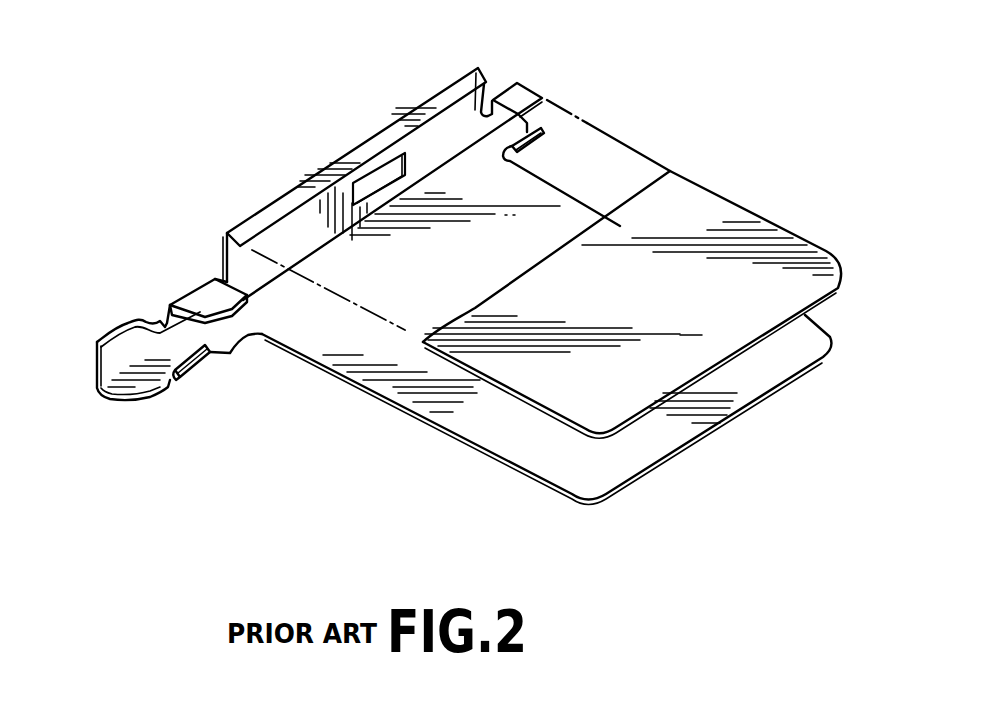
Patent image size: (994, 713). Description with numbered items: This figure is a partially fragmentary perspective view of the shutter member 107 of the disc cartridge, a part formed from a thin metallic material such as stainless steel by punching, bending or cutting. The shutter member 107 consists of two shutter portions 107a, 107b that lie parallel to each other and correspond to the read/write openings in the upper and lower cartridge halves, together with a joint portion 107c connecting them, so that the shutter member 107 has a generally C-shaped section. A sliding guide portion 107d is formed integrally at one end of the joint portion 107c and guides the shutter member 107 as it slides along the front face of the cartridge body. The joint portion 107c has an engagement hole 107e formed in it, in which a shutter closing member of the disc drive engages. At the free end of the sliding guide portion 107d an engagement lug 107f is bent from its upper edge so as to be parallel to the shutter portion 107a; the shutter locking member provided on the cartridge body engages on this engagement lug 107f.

The shutter member 107 is at (302, 185).
The shutter portion 107a is at (738, 210).
The shutter portion 107b is at (528, 443).
The joint portion 107c is at (448, 136).
The sliding guide portion 107d is at (192, 312).
The engagement hole 107e is at (384, 177).
The engagement lug 107f is at (133, 318).